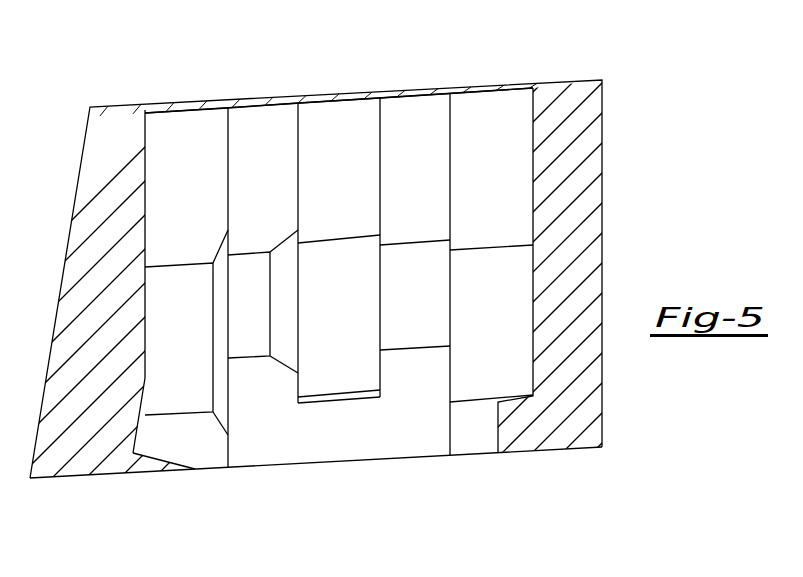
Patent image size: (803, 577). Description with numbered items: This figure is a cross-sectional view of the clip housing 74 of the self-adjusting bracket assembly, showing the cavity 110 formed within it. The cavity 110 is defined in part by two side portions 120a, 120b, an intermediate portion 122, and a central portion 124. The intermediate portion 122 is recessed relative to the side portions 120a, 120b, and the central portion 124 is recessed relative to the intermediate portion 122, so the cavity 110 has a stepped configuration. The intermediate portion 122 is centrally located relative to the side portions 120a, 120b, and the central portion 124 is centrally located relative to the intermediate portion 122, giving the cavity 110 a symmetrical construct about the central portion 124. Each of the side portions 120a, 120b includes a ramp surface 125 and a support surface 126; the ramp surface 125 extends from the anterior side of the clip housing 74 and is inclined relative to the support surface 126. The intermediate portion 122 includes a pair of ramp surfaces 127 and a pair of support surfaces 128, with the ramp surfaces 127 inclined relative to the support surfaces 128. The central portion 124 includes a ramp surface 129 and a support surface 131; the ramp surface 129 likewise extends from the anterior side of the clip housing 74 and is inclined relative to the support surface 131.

The clip housing 74 is at (568, 57).
The cavity 110 is at (292, 455).
The side portion 120a is at (200, 155).
The side portion 120b is at (480, 127).
The intermediate portion 122 is at (268, 143).
The central portion 124 is at (342, 137).
The ramp surface 125 is at (202, 353).
The support surface 126 is at (205, 215).
The ramp surfaces 127 is at (272, 325).
The support surfaces 128 is at (280, 200).
The ramp surface 129 is at (359, 335).
The support surface 131 is at (355, 205).